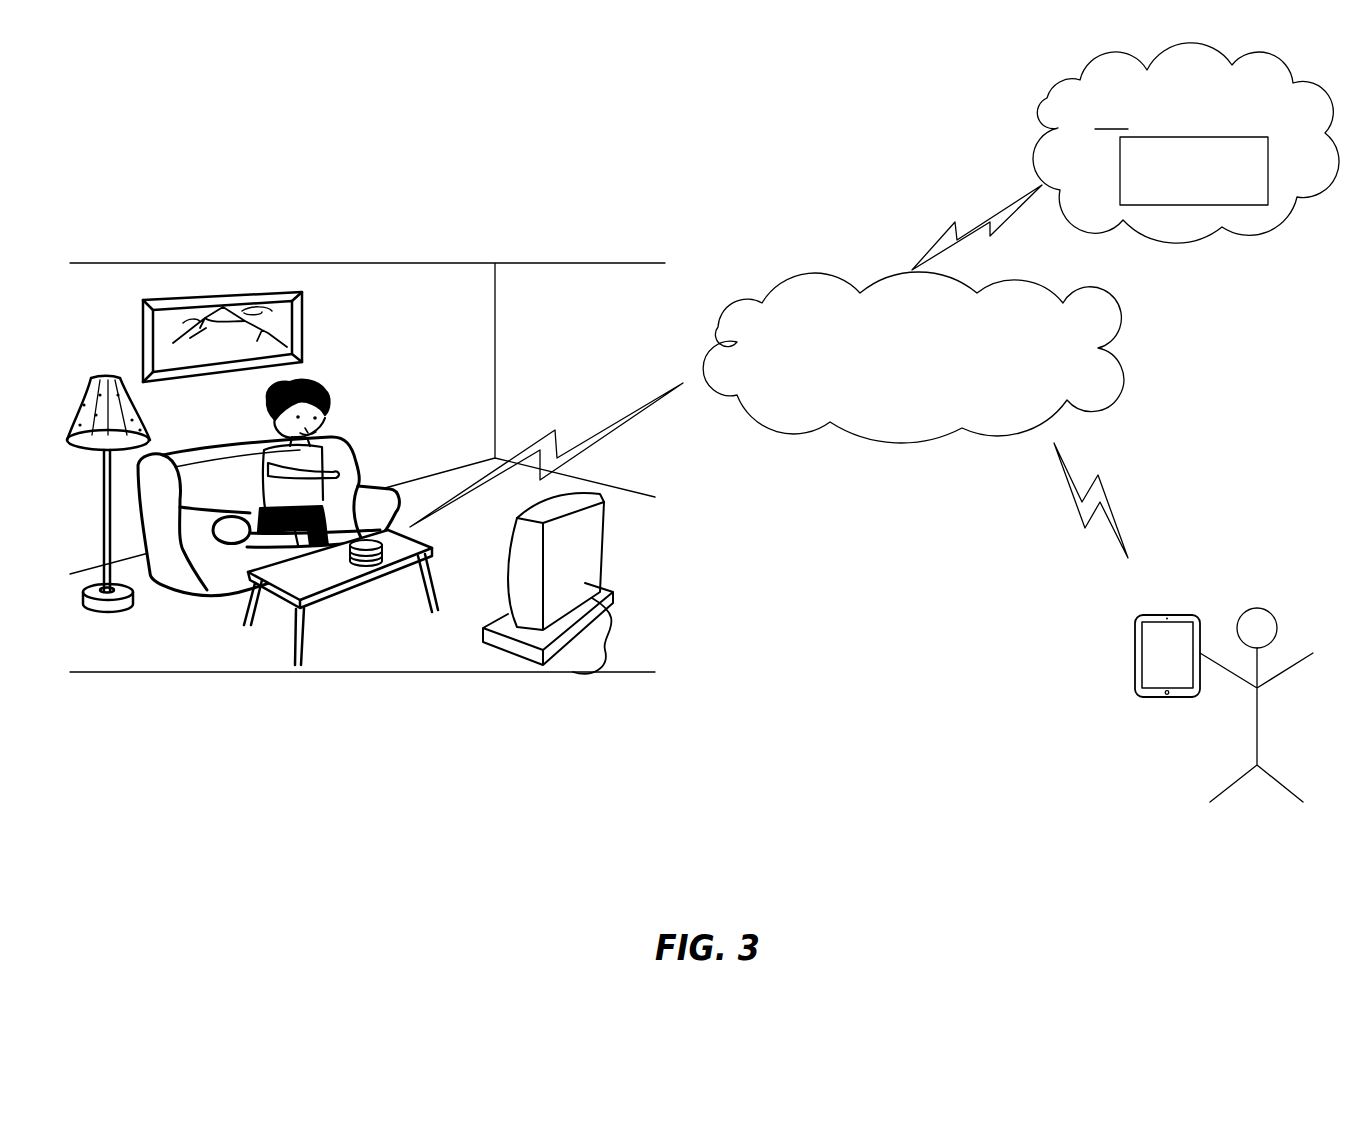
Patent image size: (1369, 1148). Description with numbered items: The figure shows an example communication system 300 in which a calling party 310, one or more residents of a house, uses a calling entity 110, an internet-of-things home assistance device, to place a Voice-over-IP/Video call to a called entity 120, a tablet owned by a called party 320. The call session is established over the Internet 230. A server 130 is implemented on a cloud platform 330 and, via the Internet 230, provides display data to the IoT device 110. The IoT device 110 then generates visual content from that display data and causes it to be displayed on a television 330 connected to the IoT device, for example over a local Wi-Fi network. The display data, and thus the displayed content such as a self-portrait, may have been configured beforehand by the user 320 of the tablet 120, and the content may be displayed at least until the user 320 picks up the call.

The communication system 300 is at (150, 95).
The calling party 310 is at (345, 398).
The calling entity 110 is at (365, 564).
The cloud platform 330 is at (522, 547).
The server 130 is at (1211, 193).
The Internet 230 is at (930, 379).
The called entity 120 is at (1148, 633).
The called party 320 is at (1271, 580).